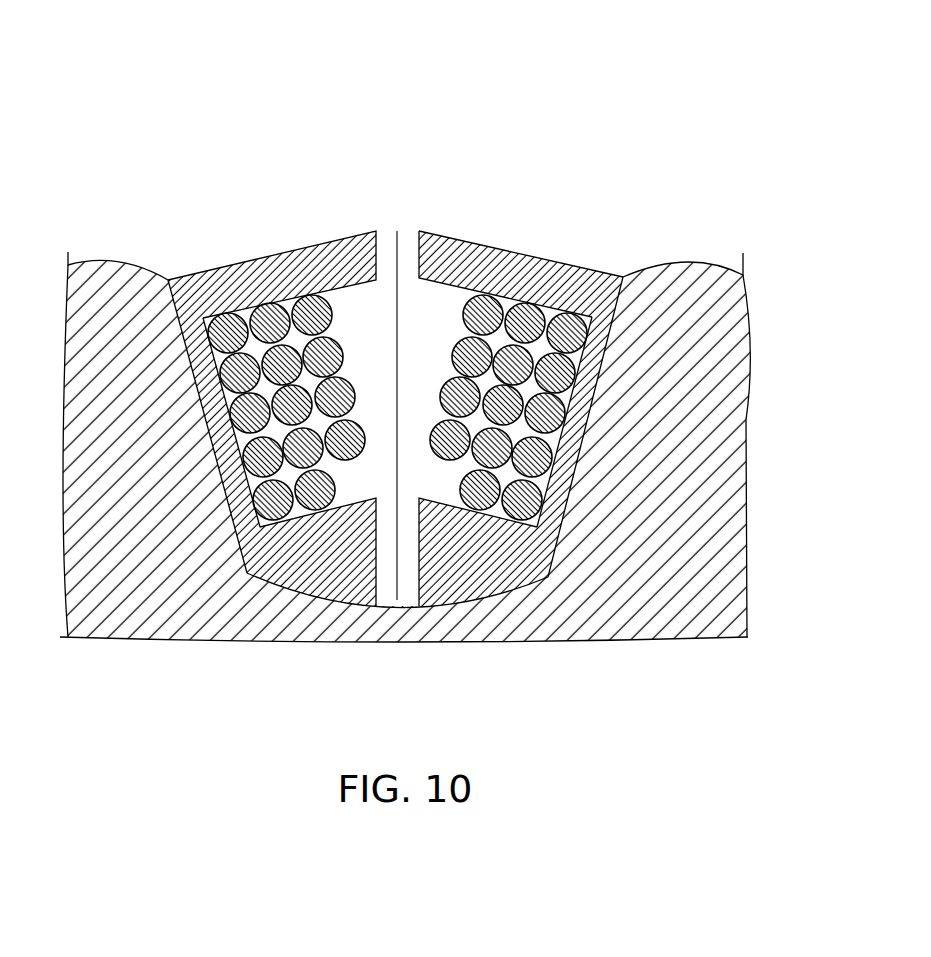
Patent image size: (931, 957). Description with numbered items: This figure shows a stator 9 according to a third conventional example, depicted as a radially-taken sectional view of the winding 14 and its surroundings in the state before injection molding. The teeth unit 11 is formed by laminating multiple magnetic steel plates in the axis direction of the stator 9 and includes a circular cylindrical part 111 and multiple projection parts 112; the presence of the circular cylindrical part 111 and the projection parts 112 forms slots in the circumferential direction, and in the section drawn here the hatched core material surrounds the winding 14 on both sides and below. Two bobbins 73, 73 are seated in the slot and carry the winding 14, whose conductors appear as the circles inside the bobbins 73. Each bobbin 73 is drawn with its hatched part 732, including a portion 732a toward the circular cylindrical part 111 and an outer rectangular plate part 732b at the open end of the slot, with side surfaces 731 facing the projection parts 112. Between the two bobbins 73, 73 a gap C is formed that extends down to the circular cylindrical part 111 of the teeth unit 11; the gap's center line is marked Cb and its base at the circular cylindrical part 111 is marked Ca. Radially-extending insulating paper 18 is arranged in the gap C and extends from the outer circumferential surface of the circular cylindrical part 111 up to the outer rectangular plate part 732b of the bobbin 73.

The stator 9 is at (616, 83).
The teeth unit 11 is at (772, 173).
The circular cylindrical part 111 is at (640, 613).
The projection parts 112 is at (667, 297).
The winding 14 is at (223, 318).
The insulating paper 18 is at (400, 277).
The bobbin 73 is at (207, 159).
The coil side wall 731 is at (217, 428).
The insulator 732 is at (388, 439).
The insulator bottom portion 732a is at (290, 550).
The outer rectangular plate part 732b is at (297, 273).
The gap C is at (388, 215).
The center bottom position Ca is at (408, 598).
The center line Cb is at (403, 231).